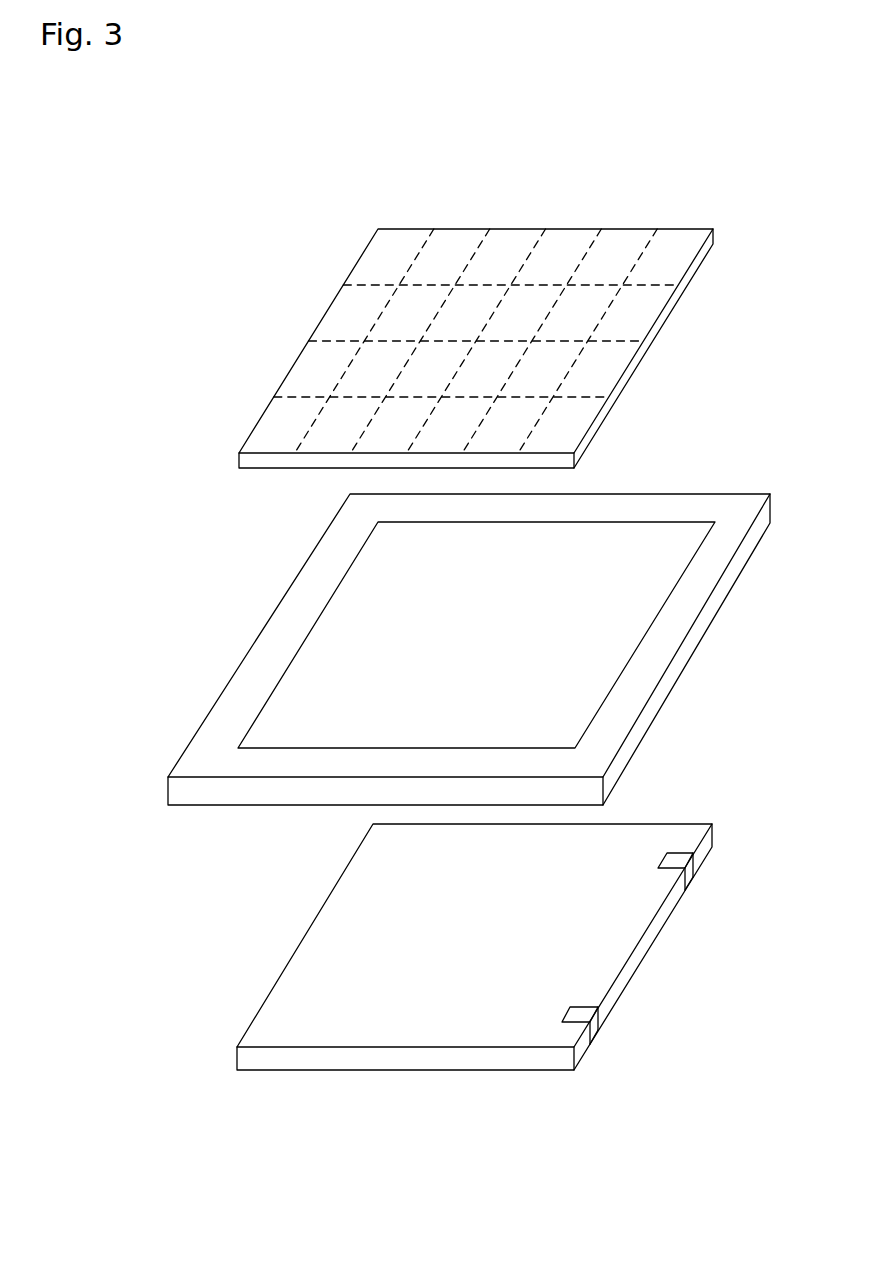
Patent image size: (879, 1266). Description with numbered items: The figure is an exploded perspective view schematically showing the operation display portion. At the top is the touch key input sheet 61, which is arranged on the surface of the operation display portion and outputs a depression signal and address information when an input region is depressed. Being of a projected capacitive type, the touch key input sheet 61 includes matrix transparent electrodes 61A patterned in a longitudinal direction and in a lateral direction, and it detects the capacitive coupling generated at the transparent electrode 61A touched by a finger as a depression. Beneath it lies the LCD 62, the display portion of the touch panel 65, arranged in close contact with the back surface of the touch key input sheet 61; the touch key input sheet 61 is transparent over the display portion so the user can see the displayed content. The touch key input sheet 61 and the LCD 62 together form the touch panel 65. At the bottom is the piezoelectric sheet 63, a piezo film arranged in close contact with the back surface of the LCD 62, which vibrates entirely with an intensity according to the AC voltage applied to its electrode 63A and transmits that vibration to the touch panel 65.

The touch key input sheet 61 is at (360, 258).
The transparent electrode 61A is at (417, 255).
The LCD 62 is at (355, 560).
The piezoelectric sheet 63 is at (295, 1002).
The electrode 63A is at (691, 877).
The touch panel 65 is at (155, 180).